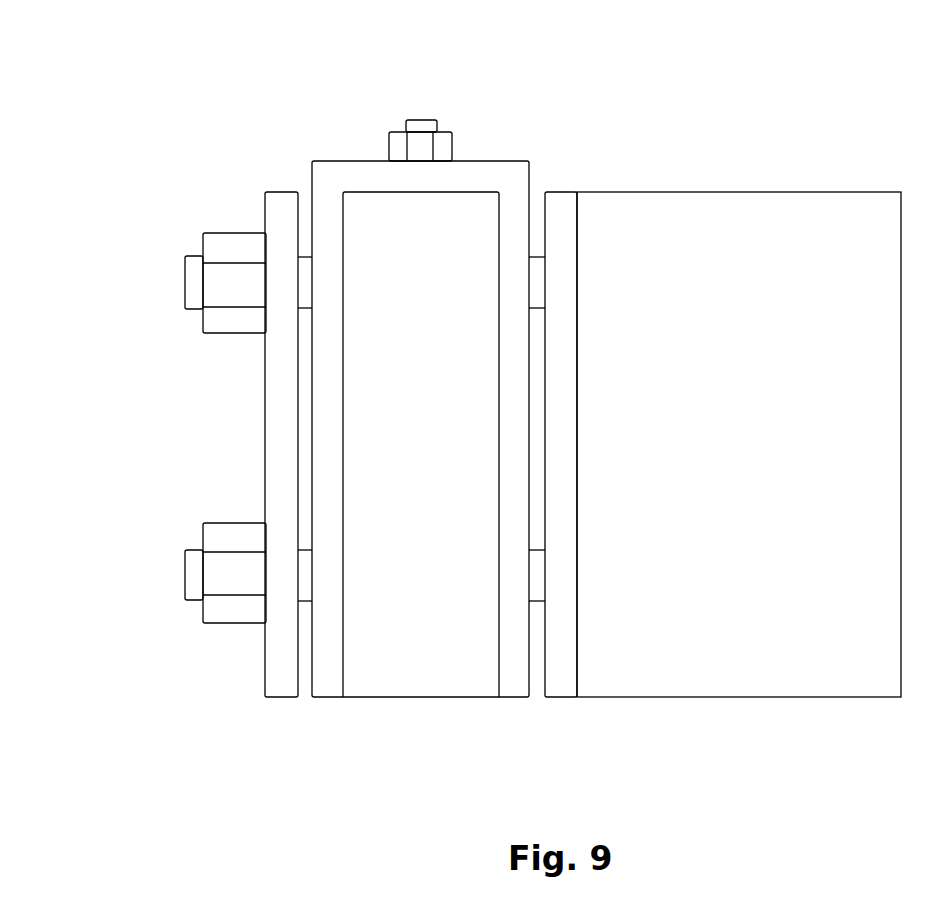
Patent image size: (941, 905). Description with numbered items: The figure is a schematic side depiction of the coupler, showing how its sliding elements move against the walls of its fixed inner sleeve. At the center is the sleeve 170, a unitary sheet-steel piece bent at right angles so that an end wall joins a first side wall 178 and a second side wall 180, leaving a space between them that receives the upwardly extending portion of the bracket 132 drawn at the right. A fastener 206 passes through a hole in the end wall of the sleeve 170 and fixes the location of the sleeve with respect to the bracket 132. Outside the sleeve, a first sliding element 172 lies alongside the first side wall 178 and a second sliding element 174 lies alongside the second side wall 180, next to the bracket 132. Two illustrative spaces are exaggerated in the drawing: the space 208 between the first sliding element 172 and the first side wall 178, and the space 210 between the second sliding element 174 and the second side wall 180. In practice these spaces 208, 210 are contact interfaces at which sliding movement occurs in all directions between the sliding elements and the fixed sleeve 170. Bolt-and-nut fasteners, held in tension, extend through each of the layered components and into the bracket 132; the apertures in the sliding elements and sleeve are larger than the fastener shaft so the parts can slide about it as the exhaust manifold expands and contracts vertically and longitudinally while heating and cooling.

The bracket 132 is at (750, 212).
The sleeve 170 is at (480, 148).
The first sliding element 172 is at (282, 203).
The second sliding element 174 is at (562, 198).
The first side wall 178 is at (332, 685).
The second side wall 180 is at (517, 687).
The fastener 206 is at (421, 120).
The illustrative space 208 is at (292, 424).
The illustrative space 210 is at (542, 712).